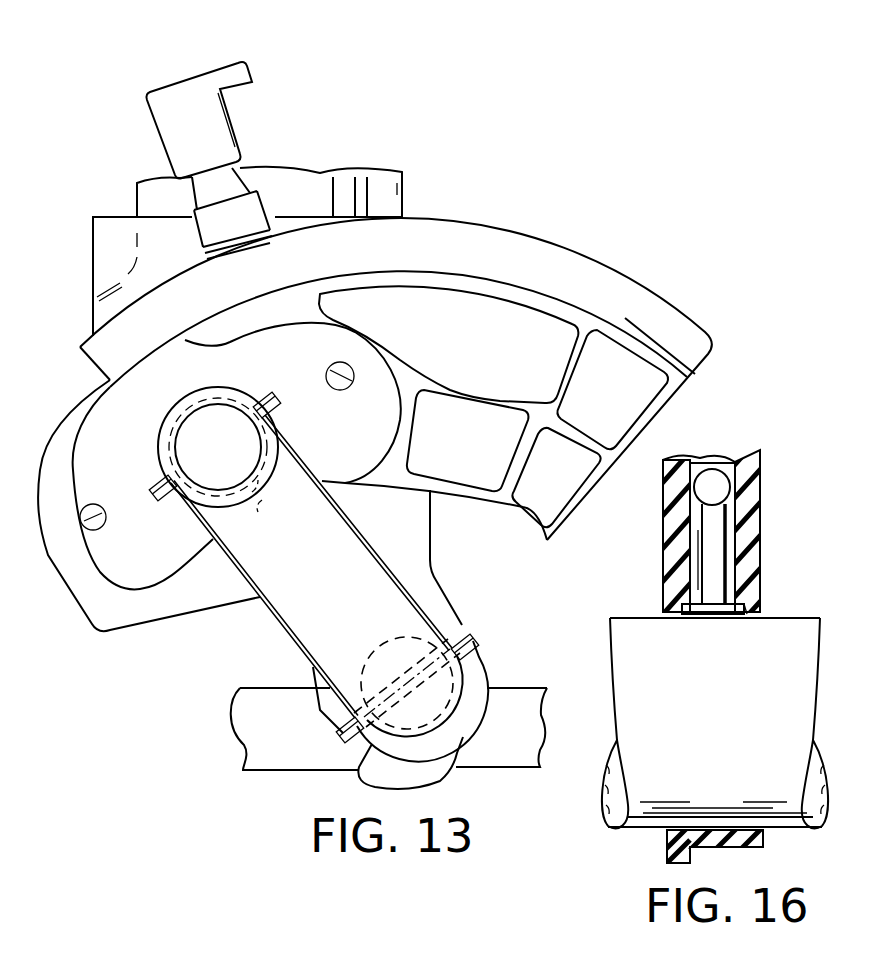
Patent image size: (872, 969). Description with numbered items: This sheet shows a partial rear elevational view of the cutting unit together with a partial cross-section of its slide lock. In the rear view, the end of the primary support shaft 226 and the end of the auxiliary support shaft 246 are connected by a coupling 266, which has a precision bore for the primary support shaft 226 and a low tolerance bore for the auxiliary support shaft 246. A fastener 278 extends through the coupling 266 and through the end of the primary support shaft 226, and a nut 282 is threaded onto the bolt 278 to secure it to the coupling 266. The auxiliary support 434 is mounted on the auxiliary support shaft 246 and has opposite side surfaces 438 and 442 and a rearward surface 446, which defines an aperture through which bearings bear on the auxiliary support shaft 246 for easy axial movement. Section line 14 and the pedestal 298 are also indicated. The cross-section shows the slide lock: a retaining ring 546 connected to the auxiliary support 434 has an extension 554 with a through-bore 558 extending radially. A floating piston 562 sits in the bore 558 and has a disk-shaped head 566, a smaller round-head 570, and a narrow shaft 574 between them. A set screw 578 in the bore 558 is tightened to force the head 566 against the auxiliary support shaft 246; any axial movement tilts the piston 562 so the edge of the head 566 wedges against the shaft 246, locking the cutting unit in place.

In FIG. 13, the section line 14- 14 is at (299, 383).
In FIG. 13, the primary support shaft 226 is at (478, 670).
In FIG. 13, the auxiliary support shaft 246 is at (254, 494).
In FIG. 16, the auxiliary support shaft 246 is at (790, 616).
In FIG. 13, the coupling 266 is at (273, 617).
In FIG. 13, the fastener 278 is at (486, 634).
In FIG. 13, the nut 282 is at (357, 750).
In FIG. 13, the support pedestal 298 is at (431, 557).
In FIG. 13, the auxiliary support 434 is at (678, 388).
In FIG. 13, the side surface 438 is at (100, 384).
In FIG. 13, the side surface 442 is at (636, 441).
In FIG. 13, the rearward surface 446 is at (373, 482).
In FIG. 16, the retaining ring 546 is at (764, 477).
In FIG. 16, the extension 554 is at (757, 556).
In FIG. 16, the through-bore 558 is at (691, 521).
In FIG. 16, the floating piston 562 is at (748, 597).
In FIG. 16, the disk-shaped head 566 is at (712, 616).
In FIG. 16, the round-head 570 is at (753, 460).
In FIG. 16, the shaft 574 is at (712, 556).
In FIG. 16, the set screw 578 is at (663, 467).